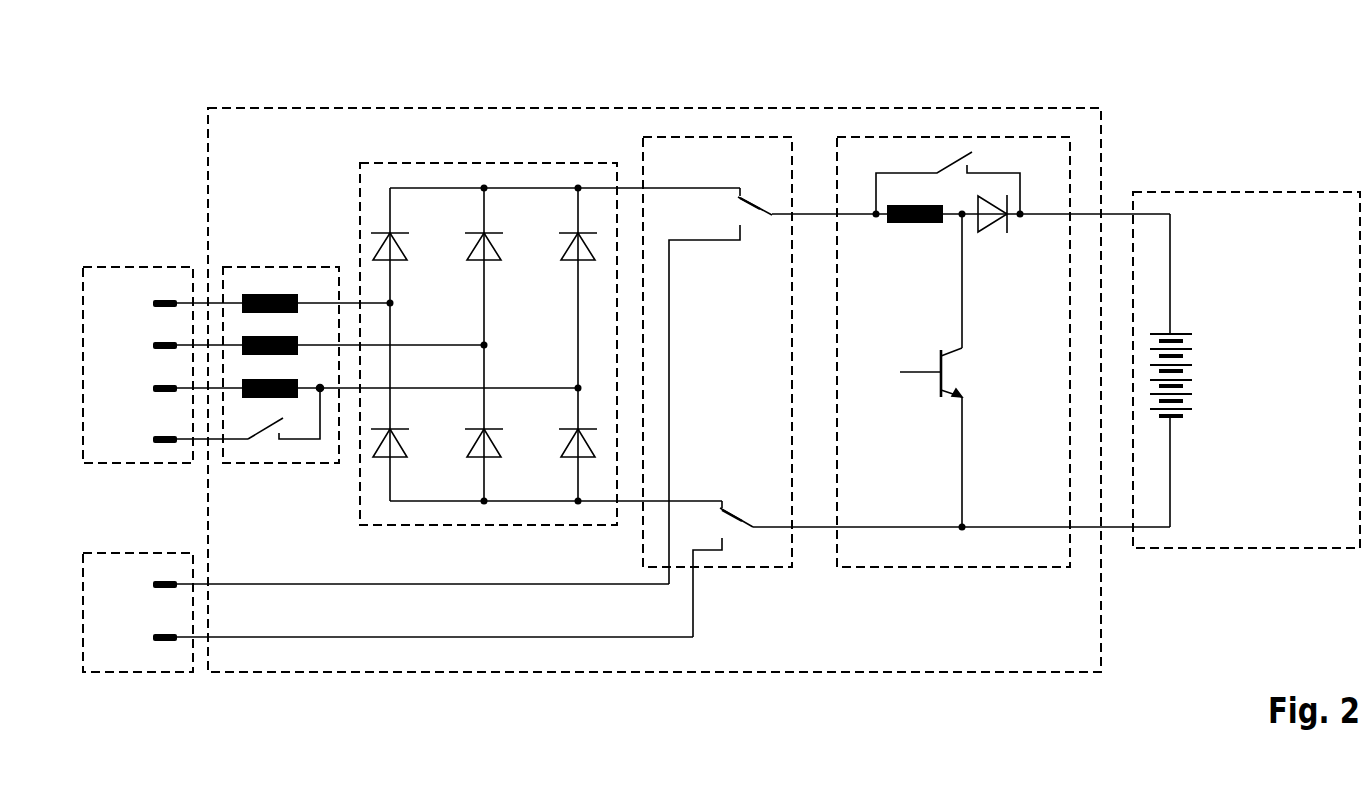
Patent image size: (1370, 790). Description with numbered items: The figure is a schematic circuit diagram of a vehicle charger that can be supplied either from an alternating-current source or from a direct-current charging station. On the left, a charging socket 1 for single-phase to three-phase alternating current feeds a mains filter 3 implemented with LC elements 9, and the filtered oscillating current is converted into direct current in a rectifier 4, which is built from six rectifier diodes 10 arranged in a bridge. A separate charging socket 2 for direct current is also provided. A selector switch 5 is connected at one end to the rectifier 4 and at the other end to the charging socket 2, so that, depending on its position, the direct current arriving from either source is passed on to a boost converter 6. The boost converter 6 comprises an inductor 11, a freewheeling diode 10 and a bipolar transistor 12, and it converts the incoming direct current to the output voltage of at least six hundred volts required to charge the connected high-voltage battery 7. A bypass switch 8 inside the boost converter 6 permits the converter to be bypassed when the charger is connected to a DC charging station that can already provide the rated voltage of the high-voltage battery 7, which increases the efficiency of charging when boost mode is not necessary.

The charging socket 1 is at (130, 266).
The charging socket 2 is at (132, 552).
The input filter 3 is at (308, 266).
The rectifier 4 is at (507, 162).
The selector switch 5 is at (720, 136).
The boost converter 6 is at (1010, 136).
The high-voltage battery 7 is at (1256, 191).
The bypass switch 8 is at (940, 150).
The LC elements 9 is at (265, 293).
The diode 10 is at (492, 262).
The inductor 11 is at (912, 223).
The bipolar transistor 12 is at (915, 378).